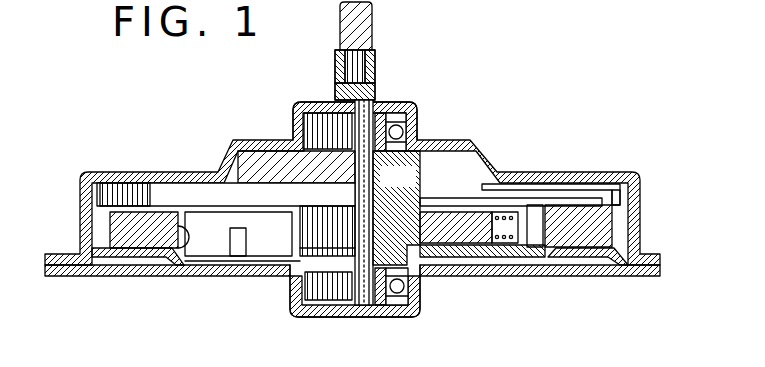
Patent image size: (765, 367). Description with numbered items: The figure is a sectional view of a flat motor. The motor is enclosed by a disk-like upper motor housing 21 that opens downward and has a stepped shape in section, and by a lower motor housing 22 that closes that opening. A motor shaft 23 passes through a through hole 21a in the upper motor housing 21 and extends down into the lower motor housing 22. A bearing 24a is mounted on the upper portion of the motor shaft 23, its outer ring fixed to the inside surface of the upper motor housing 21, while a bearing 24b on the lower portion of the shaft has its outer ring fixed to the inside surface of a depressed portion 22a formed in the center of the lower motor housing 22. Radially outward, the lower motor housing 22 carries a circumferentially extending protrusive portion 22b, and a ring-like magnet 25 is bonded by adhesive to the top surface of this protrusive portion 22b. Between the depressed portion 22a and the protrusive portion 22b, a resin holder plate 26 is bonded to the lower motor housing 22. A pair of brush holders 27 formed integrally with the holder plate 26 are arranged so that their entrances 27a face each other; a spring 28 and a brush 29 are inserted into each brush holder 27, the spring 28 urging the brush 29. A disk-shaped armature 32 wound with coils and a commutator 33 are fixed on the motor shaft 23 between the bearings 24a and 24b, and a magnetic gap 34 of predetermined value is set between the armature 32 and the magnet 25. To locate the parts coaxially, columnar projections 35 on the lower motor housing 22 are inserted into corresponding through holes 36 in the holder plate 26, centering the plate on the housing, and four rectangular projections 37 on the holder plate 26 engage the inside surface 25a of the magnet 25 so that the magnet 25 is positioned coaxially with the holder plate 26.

The upper motor housing 21 is at (268, 138).
The through hole 21a is at (320, 103).
The lower motor housing 22 is at (249, 270).
The depressed portion 22a is at (385, 317).
The protrusive portion 22b is at (599, 258).
The motor shaft 23 is at (375, 64).
The bearing 24a is at (296, 119).
The bearing 24b is at (414, 293).
The magnet 25 is at (604, 226).
The inside surface 25a is at (173, 256).
The holder plate 26 is at (473, 263).
The brush holder 27 is at (508, 197).
The entrance 27a is at (411, 197).
The spring 28 is at (517, 263).
The brush 29 is at (457, 222).
The armature 32 is at (566, 184).
The commutator 33 is at (312, 234).
The magnetic gap 34 is at (614, 183).
The columnar projection 35 is at (226, 272).
The through hole 36 is at (242, 278).
The rectangular projection 37 is at (232, 243).